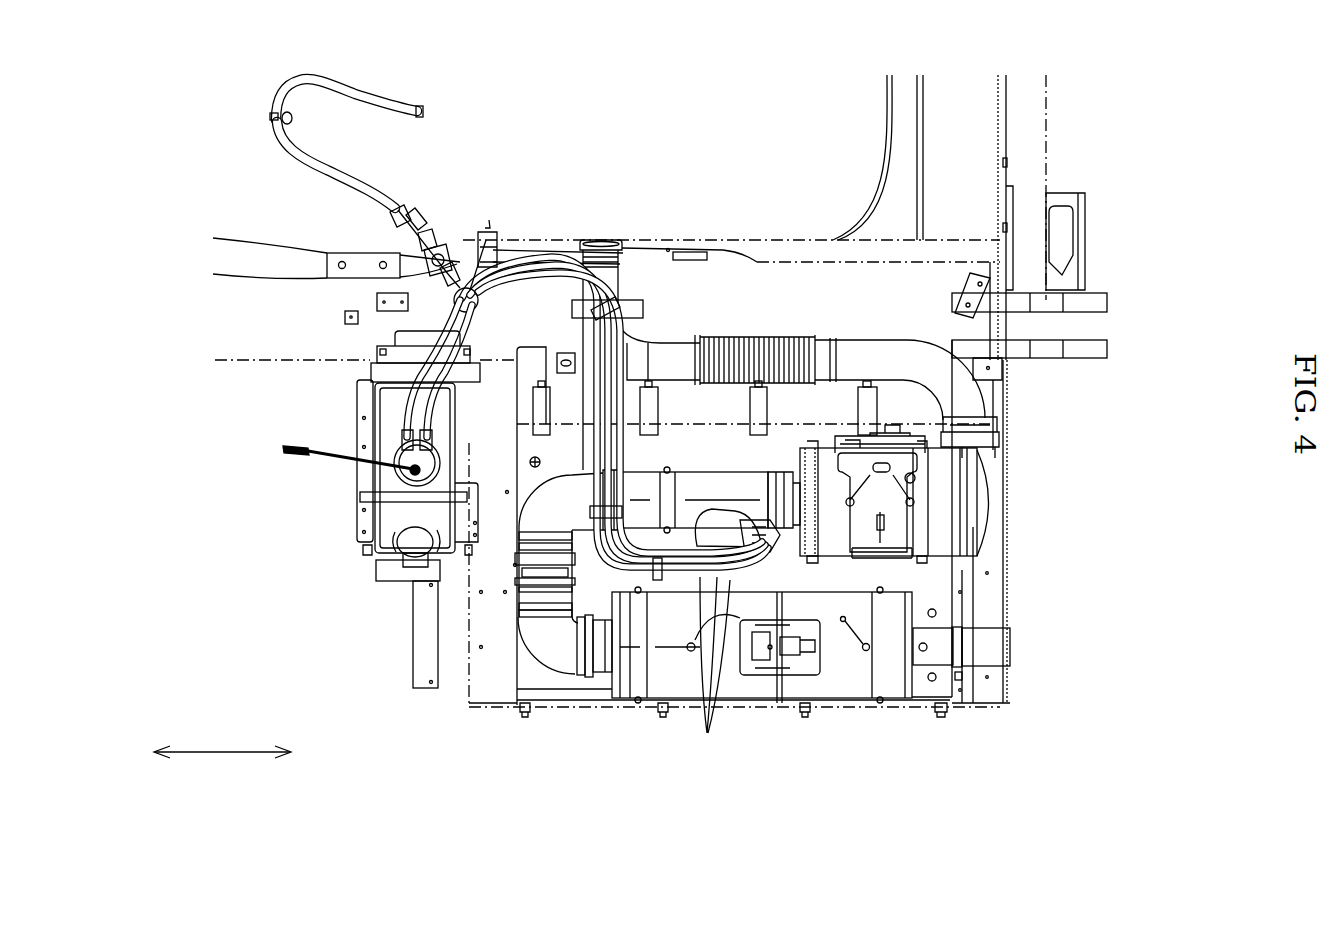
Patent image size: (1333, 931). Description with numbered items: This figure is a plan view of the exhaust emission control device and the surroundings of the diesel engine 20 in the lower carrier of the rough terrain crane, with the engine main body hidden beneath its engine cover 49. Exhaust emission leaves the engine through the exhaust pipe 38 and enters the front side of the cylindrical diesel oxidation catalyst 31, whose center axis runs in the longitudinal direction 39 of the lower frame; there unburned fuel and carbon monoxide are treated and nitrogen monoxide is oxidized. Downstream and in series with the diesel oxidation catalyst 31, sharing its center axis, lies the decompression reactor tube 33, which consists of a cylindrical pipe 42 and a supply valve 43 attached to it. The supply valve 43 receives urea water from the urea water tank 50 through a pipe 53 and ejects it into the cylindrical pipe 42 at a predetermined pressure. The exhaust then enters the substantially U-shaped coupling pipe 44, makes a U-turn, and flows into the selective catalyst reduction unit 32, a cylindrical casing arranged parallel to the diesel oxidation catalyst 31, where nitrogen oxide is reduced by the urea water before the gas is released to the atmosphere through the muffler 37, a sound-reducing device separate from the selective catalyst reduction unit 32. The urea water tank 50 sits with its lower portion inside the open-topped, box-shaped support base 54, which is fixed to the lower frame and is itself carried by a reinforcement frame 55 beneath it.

The diesel engine 20 is at (566, 115).
The diesel oxidation catalyst (DOC) 31 is at (992, 545).
The selective catalyst reduction (SCR) 32 is at (847, 714).
The decompression reactor tube (DRT) 33 is at (703, 455).
The muffler 37 is at (1010, 647).
The exhaust pipe 38 is at (977, 373).
The longitudinal direction 39 is at (222, 752).
The cylindrical pipe 42 is at (737, 473).
The supply valve 43 is at (763, 533).
The coupling pipe 44 is at (533, 655).
The engine cover 49 is at (1010, 106).
The urea water tank 50 is at (393, 517).
The pipe 53 is at (710, 670).
The support base 54 is at (365, 410).
The reinforcement frame 55 is at (425, 659).